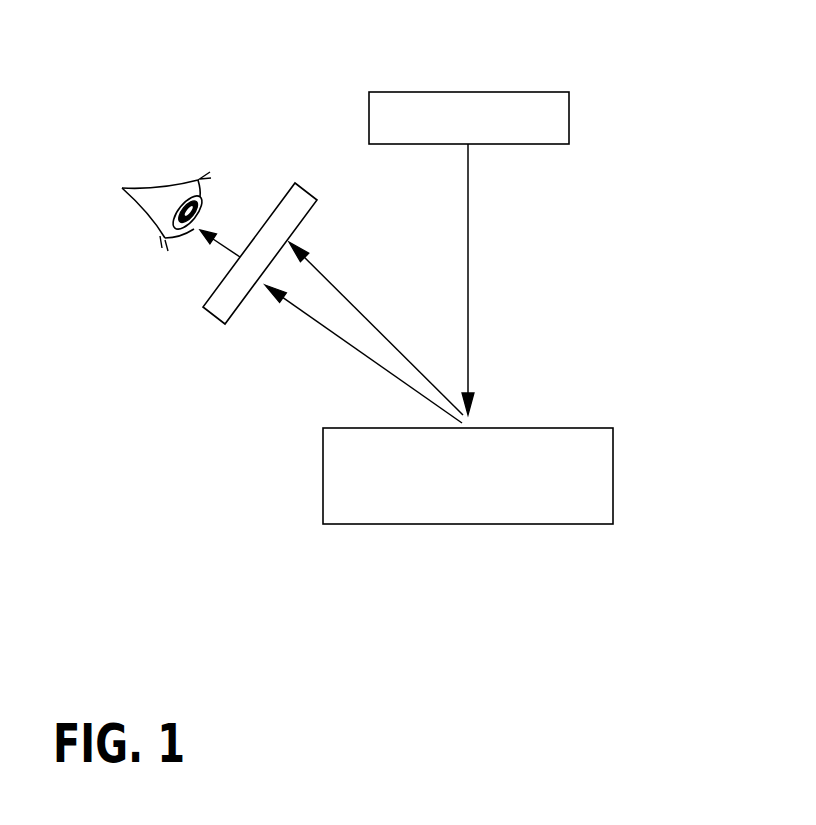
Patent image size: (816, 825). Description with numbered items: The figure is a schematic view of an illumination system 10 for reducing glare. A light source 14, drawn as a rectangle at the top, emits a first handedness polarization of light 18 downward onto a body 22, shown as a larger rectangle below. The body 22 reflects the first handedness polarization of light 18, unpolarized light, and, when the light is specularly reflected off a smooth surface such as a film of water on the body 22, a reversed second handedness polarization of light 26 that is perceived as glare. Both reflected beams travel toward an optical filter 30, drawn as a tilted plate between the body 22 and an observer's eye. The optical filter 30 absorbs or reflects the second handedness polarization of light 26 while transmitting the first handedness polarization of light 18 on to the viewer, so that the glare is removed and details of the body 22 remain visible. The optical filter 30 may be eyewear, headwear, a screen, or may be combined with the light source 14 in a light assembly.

The illumination system 10 is at (622, 253).
The light source 14 is at (519, 107).
The first handedness polarization of light 18 is at (467, 302).
The body 22 is at (461, 487).
The second handedness polarization of light 26 is at (365, 313).
The optical filter 30 is at (212, 320).